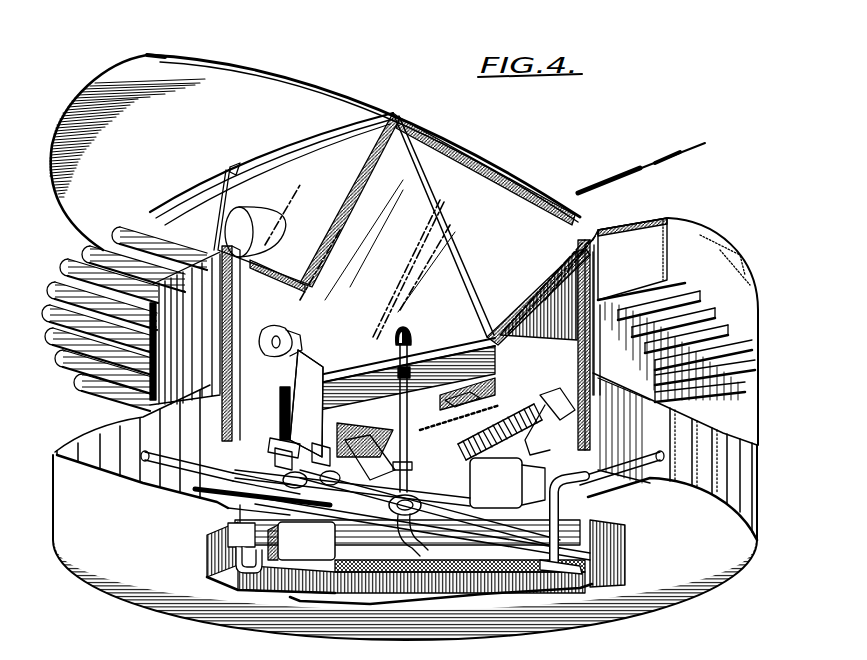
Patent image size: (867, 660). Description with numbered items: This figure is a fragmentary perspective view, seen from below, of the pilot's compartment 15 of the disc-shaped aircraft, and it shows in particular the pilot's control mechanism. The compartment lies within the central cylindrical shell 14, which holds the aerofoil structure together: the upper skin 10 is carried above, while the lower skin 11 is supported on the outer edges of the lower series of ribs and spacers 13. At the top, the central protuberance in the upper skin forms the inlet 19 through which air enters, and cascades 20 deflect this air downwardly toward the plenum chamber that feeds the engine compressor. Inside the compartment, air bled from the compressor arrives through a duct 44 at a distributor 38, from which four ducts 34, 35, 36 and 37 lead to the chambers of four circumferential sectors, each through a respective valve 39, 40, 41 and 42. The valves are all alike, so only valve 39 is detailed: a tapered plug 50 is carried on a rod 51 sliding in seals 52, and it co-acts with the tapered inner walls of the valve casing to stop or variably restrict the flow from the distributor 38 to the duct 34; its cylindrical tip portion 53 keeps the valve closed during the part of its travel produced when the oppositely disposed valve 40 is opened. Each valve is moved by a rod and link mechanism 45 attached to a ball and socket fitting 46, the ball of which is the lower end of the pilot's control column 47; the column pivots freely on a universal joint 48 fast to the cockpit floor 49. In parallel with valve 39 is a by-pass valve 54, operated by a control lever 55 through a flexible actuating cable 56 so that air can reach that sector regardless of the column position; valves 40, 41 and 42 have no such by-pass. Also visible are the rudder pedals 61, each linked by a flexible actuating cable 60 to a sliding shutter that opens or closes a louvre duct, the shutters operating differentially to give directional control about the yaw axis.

The upper skin 10 is at (680, 226).
The lower skin 11 is at (405, 542).
The lower series of ribs and spacers 13 is at (103, 490).
The central cylindrical shell 14 is at (600, 288).
The pilot's compartment 15 is at (478, 192).
The inlet 19 is at (292, 105).
The cascades 20 is at (119, 224).
The duct 34 is at (220, 503).
The duct 35 is at (605, 562).
The duct 36 is at (218, 458).
The duct 37 is at (240, 590).
The distributor 38 is at (417, 556).
The valve 39 is at (280, 448).
The valve 40 is at (608, 538).
The valve 41 is at (507, 483).
The valve 42 is at (210, 538).
The duct 44 is at (507, 570).
The rod and link mechanism 45 is at (353, 440).
The ball and socket fitting 46 is at (480, 403).
The pilot's control column 47 is at (411, 334).
The universal joint 48 is at (443, 400).
The cockpit floor 49 is at (520, 442).
The tapered plug 50 is at (295, 455).
The rod 51 is at (220, 440).
The seals 52 is at (278, 448).
The cylindrical tip portion 53 is at (301, 541).
The by-pass valve 54 is at (215, 565).
The control lever 55 is at (322, 326).
The flexible actuating cable 56 is at (302, 398).
The flexible actuating cable 60 is at (607, 443).
The rudder pedals 61 is at (563, 390).